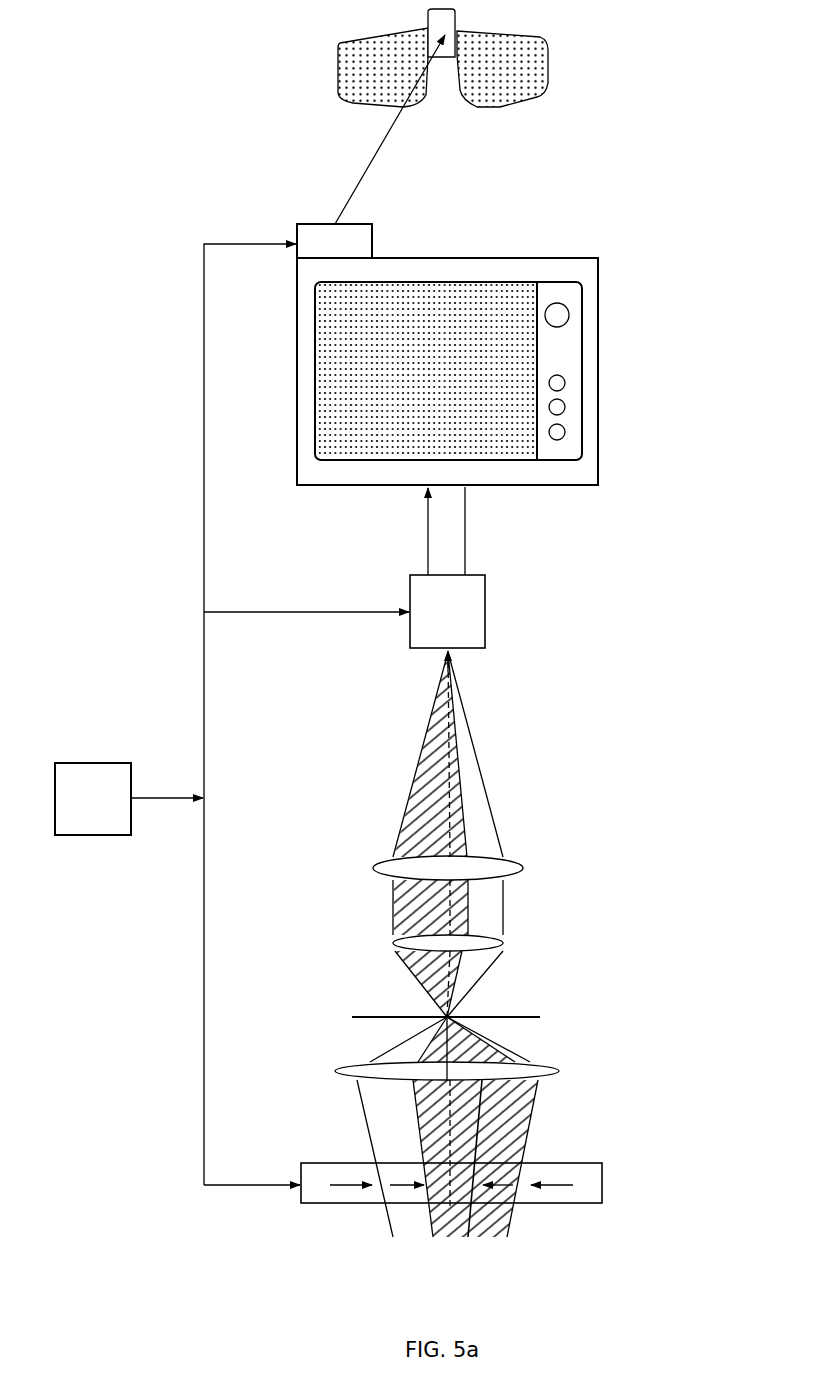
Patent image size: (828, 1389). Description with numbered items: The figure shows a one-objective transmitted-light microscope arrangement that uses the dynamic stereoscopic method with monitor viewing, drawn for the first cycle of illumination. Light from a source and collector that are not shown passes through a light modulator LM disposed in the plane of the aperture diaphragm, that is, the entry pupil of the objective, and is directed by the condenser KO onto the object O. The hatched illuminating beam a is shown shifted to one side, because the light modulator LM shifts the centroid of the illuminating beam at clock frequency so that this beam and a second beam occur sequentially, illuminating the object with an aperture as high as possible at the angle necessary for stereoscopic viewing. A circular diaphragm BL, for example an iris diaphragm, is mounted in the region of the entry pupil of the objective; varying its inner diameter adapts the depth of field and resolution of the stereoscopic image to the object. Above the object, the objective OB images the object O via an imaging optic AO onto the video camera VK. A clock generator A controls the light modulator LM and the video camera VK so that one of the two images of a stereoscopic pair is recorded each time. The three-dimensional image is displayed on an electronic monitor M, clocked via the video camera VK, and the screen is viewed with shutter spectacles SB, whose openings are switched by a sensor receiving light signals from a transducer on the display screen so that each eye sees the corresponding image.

The shutter spectacles SB is at (550, 62).
The electronic monitor M is at (603, 351).
The video camera VK is at (487, 607).
The clock generator A is at (96, 762).
The imaging optic AO is at (523, 868).
The objective OB is at (503, 945).
The object O is at (531, 1016).
The condenser KO is at (560, 1070).
The circular diaphragm BL is at (523, 1158).
The light modulator LM is at (602, 1177).
The beam a is at (467, 1248).